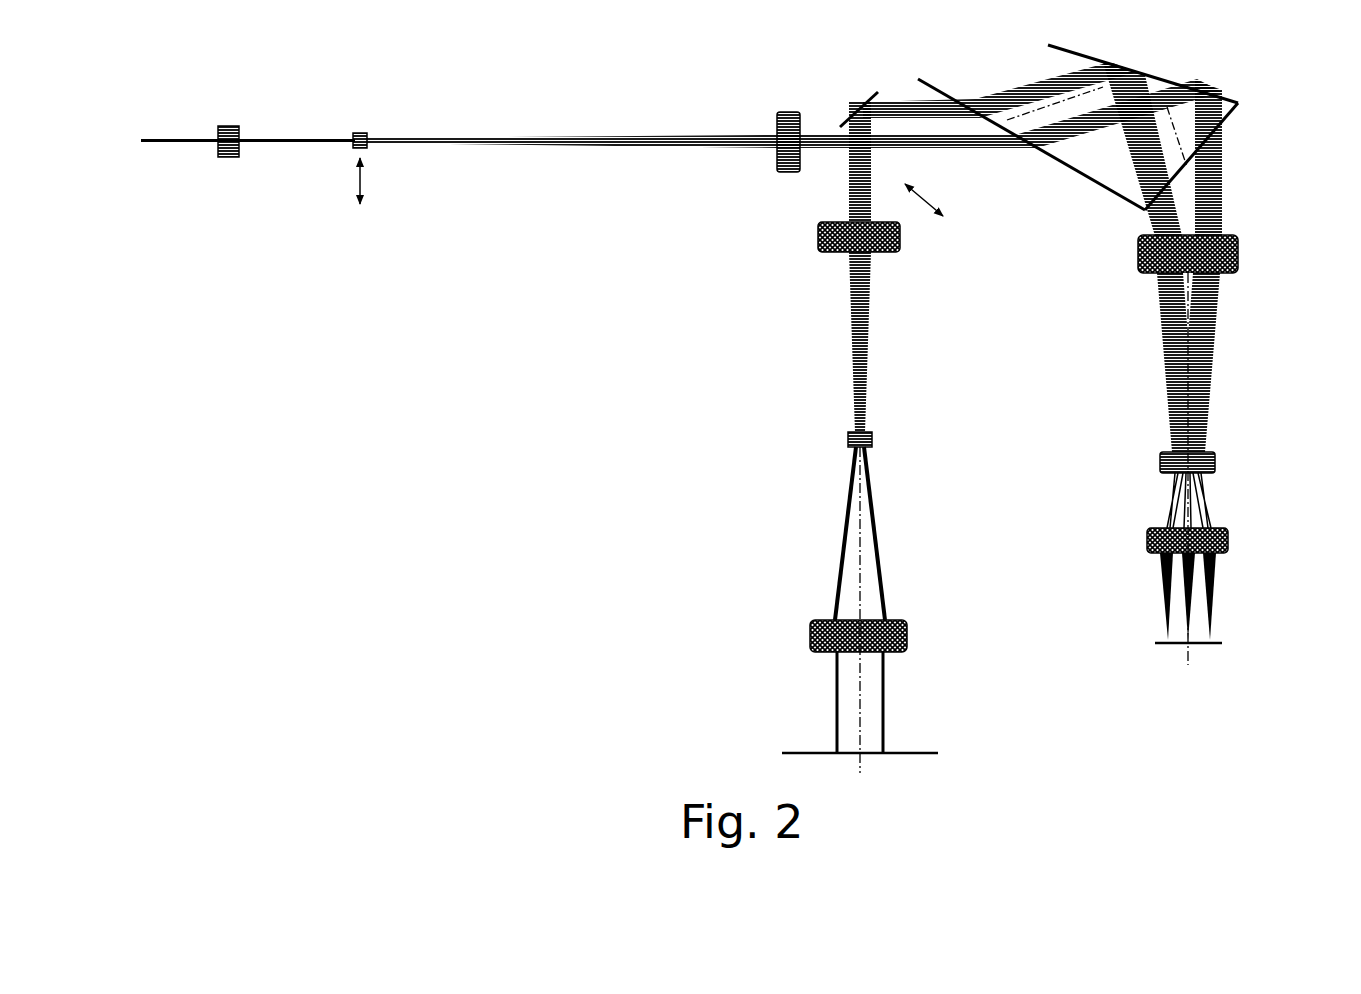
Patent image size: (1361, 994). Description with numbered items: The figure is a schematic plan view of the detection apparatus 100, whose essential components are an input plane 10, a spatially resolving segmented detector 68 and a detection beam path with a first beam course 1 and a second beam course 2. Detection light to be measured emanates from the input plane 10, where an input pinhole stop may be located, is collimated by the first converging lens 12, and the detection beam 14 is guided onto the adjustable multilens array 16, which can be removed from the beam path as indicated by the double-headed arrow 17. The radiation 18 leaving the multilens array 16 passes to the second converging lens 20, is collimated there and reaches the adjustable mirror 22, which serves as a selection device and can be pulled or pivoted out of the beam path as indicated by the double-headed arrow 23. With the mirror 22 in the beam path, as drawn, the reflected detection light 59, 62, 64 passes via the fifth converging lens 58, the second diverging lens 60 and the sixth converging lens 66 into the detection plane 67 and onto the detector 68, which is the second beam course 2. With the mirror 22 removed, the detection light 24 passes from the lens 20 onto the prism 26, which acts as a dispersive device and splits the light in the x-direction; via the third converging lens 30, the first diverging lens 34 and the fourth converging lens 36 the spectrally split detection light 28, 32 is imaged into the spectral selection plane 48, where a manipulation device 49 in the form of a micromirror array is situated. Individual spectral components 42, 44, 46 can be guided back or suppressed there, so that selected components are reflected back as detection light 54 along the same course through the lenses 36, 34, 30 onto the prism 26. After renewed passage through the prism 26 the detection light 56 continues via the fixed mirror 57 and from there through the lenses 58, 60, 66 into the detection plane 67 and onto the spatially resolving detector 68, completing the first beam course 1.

The first beam course 1 is at (484, 165).
The second beam course 2 is at (600, 337).
The input plane 10 is at (141, 143).
The first converging lens 12 is at (231, 126).
The detection beam downstream of first converging lens 14 is at (294, 143).
The adjustable multilens array 16 is at (361, 133).
The double-headed arrow 17 is at (363, 181).
The detection beam downstream of multilens array 18 is at (610, 150).
The second converging lens 20 is at (790, 112).
The adjustable mirror 22 is at (872, 152).
The double-headed arrow 23 is at (922, 198).
The detection beam downstream of second converging lens 24 is at (973, 150).
The prism 26 is at (1107, 178).
The detection beam downstream of prism 28 is at (1223, 178).
The third converging lens 30 is at (1140, 270).
The detection beam downstream of third converging lens 32 is at (1218, 300).
The first diverging lens 34 is at (1162, 465).
The fourth converging lens 36 is at (1160, 550).
The spectrally split partial beam 42 is at (1160, 598).
The spectrally split partial beam 44 is at (1213, 618).
The spectrally split partial beam 46 is at (1218, 580).
The spectral selection plane 48 is at (1177, 645).
The manipulation device 49 is at (1188, 685).
The detection light reflected back from the spectral selection plane 54 is at (1163, 322).
The detection light after renewed passage through prism 56 is at (915, 103).
The fixed mirror 57 is at (857, 118).
The fifth converging lens 58 is at (818, 240).
The detection light downstream of fifth converging lens 59 is at (849, 320).
The second diverging lens 60 is at (849, 440).
The detection light downstream of second diverging lens 62 is at (848, 530).
The detection light downstream of second diverging lens 64 is at (877, 530).
The sixth converging lens 66 is at (812, 635).
The detection plane 67 is at (887, 714).
The spatially resolving segmented detector 68 is at (918, 753).
The detection apparatus 100 is at (566, 336).